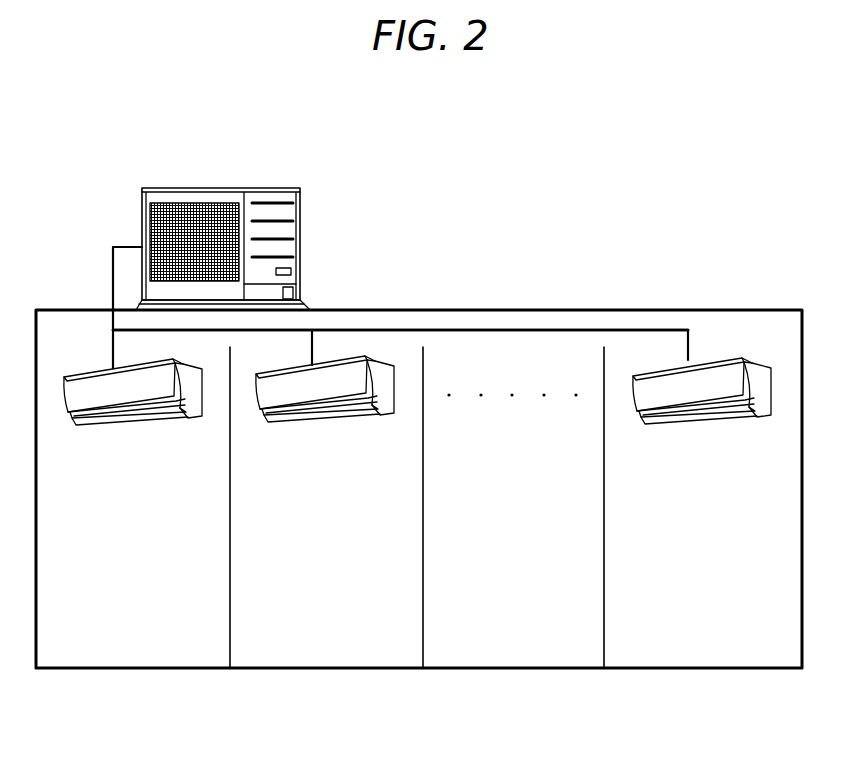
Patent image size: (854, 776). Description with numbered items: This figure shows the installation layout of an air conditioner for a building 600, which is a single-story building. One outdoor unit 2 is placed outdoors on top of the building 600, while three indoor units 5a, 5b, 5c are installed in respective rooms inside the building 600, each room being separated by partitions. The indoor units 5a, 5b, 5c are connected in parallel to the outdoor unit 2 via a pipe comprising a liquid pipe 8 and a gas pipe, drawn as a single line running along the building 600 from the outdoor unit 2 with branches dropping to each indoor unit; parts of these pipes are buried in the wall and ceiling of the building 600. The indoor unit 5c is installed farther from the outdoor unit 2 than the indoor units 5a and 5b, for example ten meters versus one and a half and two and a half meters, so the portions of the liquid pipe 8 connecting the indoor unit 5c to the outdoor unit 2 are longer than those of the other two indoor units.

The outdoor unit 2 is at (205, 187).
The indoor unit 5a is at (97, 368).
The indoor unit 5b is at (327, 360).
The indoor unit 5c is at (703, 362).
The liquid pipe 8 is at (458, 330).
The building 600 is at (558, 310).